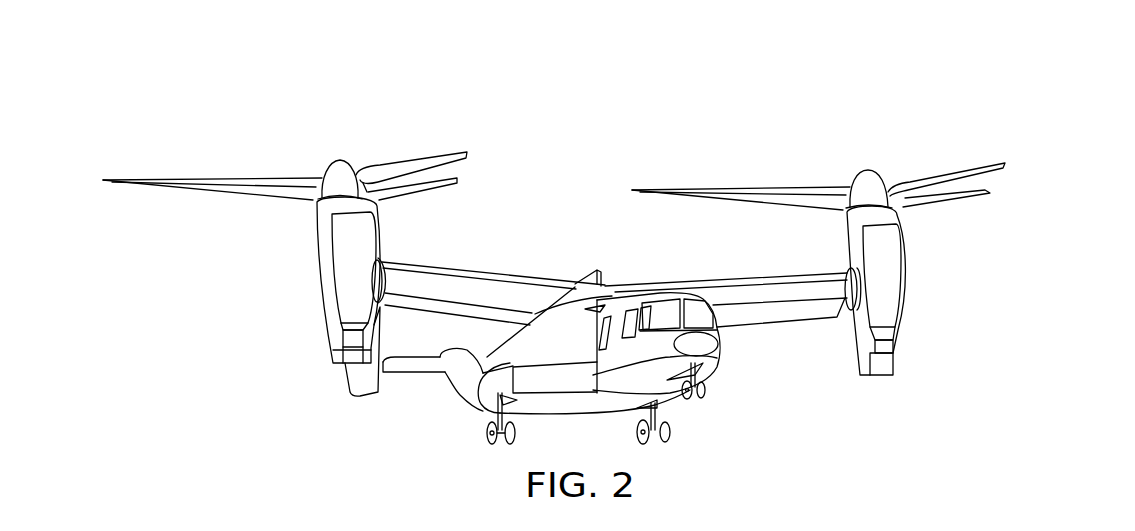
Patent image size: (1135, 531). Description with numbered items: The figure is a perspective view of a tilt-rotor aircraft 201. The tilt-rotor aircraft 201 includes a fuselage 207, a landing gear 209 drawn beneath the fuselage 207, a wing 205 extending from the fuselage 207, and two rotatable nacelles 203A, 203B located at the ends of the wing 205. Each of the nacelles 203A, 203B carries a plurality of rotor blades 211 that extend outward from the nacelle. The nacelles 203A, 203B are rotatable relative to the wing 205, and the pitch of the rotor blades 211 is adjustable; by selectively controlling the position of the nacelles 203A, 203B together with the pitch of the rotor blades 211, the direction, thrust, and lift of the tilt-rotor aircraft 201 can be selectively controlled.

The tilt-rotor aircraft 201 is at (554, 241).
The rotatable nacelle 203A is at (292, 307).
The rotatable nacelle 203B is at (910, 308).
The wing 205 is at (480, 268).
The fuselage 207 is at (720, 357).
The landing gear 209 is at (488, 430).
The rotor blades 211 is at (427, 160).